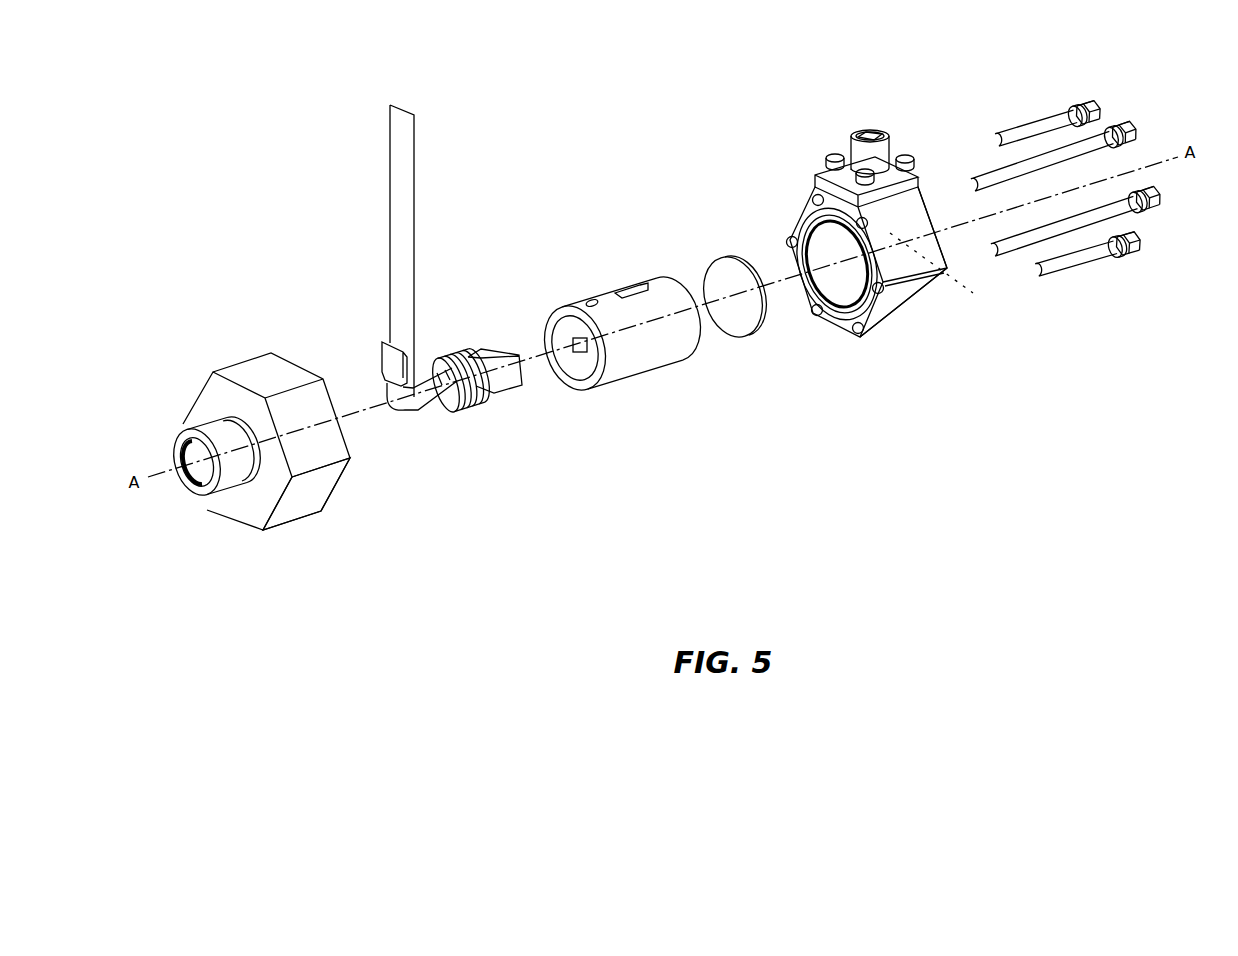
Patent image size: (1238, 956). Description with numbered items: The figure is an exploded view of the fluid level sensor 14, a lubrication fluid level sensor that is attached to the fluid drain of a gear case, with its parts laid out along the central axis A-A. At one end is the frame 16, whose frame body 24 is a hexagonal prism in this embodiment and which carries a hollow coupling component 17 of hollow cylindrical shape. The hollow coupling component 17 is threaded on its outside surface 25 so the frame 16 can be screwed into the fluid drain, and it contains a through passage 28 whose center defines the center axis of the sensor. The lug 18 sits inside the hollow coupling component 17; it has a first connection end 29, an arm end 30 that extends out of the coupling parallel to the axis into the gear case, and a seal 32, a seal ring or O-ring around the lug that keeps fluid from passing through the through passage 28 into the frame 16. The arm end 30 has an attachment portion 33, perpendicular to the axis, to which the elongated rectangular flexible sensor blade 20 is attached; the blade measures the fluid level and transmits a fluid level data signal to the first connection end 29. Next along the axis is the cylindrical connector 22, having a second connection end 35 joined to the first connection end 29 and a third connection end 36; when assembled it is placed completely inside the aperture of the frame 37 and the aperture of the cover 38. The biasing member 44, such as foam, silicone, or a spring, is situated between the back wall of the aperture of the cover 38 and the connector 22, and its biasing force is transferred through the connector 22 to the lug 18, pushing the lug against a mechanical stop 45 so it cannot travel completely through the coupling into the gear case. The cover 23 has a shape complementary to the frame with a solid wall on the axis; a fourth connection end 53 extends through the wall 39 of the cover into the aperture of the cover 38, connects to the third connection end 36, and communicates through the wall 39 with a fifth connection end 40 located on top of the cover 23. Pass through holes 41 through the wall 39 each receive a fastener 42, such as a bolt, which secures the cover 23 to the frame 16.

The fluid level sensor 14 is at (545, 105).
The frame 16 is at (307, 502).
The hollow coupling component 17 is at (234, 469).
The lug 18 is at (456, 400).
The flexible sensor blade 20 is at (407, 170).
The connector 22 is at (637, 360).
The cover 23 is at (861, 239).
The frame body 24 is at (272, 515).
The outside surface 25 is at (245, 483).
The through passage 28 is at (187, 457).
The first connection end 29 is at (495, 357).
The arm end 30 is at (416, 412).
The seal 32 is at (462, 353).
The attachment portion 33 is at (398, 367).
The second connection end 35 is at (577, 352).
The third connection end 36 is at (637, 287).
The aperture of the frame 37 is at (316, 358).
The aperture of the cover 38 is at (812, 244).
The wall 39 is at (927, 287).
The fifth connection end 40 is at (880, 157).
The pass through holes 41 is at (856, 334).
The fasteners 42 is at (1083, 263).
The biasing member 44 is at (740, 317).
The mechanical stop 45 is at (202, 483).
The fourth connection end 53 is at (948, 273).